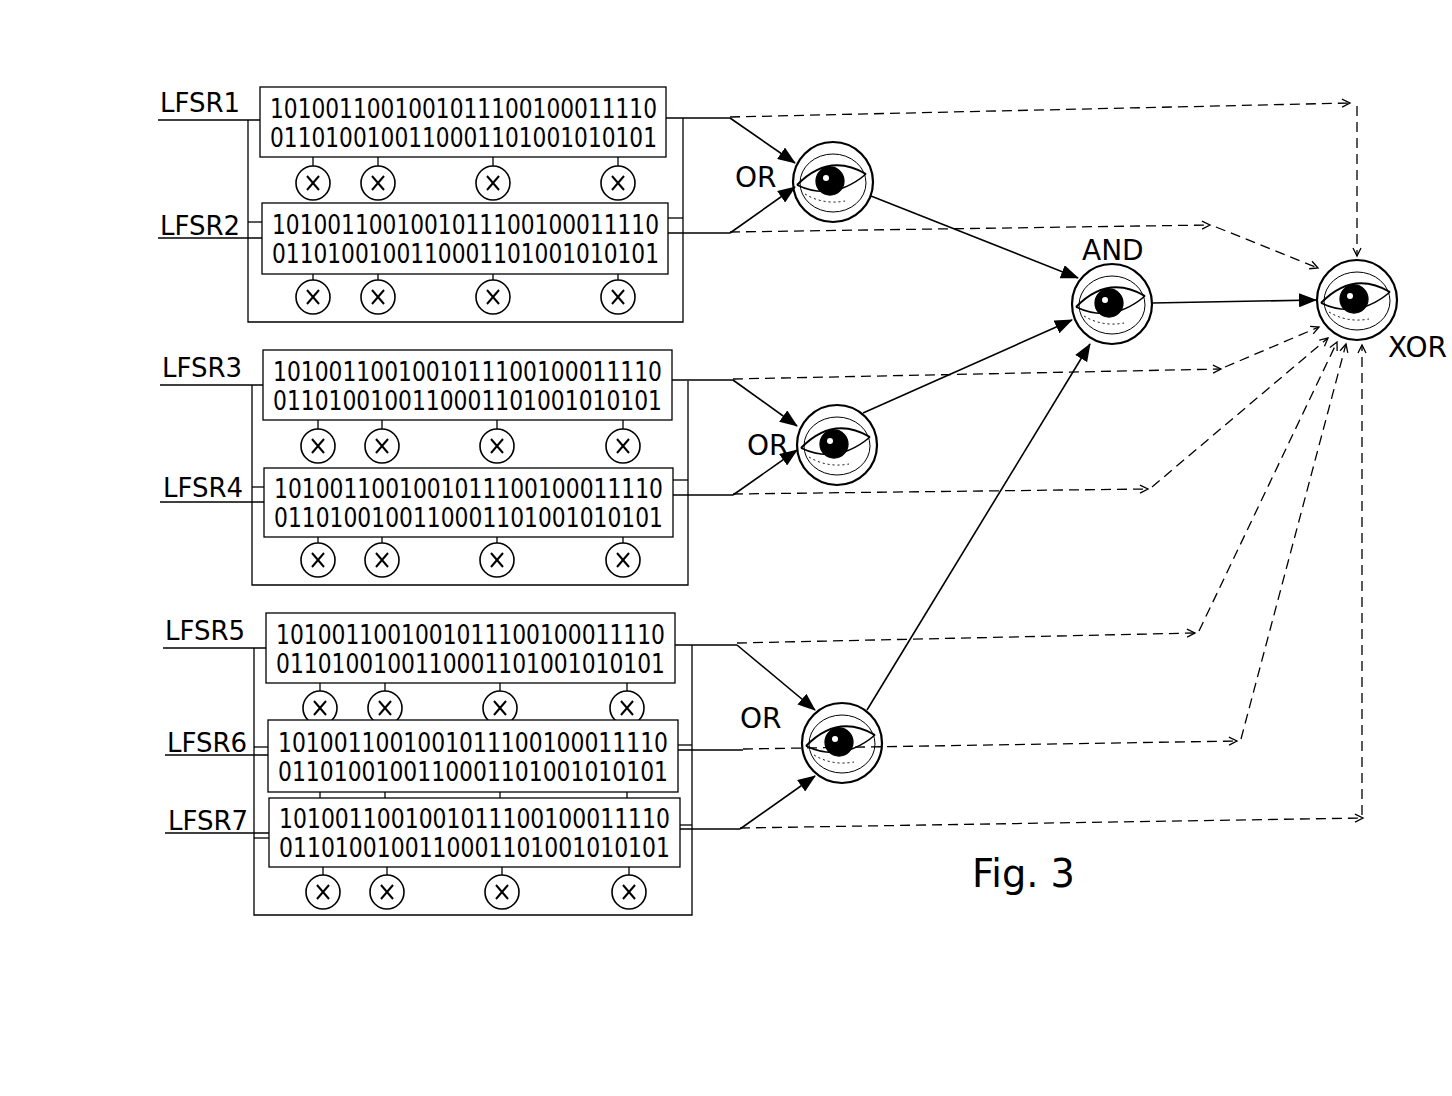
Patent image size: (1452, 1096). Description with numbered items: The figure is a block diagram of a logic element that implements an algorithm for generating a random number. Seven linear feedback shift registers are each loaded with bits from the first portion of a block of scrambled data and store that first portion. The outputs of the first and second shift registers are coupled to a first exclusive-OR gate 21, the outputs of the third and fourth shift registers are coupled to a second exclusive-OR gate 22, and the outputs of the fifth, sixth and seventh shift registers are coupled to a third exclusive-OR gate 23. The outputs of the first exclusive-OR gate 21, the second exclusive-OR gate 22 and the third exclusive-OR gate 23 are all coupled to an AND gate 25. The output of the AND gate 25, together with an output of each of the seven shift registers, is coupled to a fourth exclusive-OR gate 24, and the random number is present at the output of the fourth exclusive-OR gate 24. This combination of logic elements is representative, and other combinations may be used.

The first exclusive-OR gate 21 is at (860, 176).
The second exclusive-OR gate 22 is at (872, 437).
The third exclusive-OR gate 23 is at (878, 730).
The fourth exclusive-OR gate 24 is at (1382, 295).
The AND gate 25 is at (1138, 300).